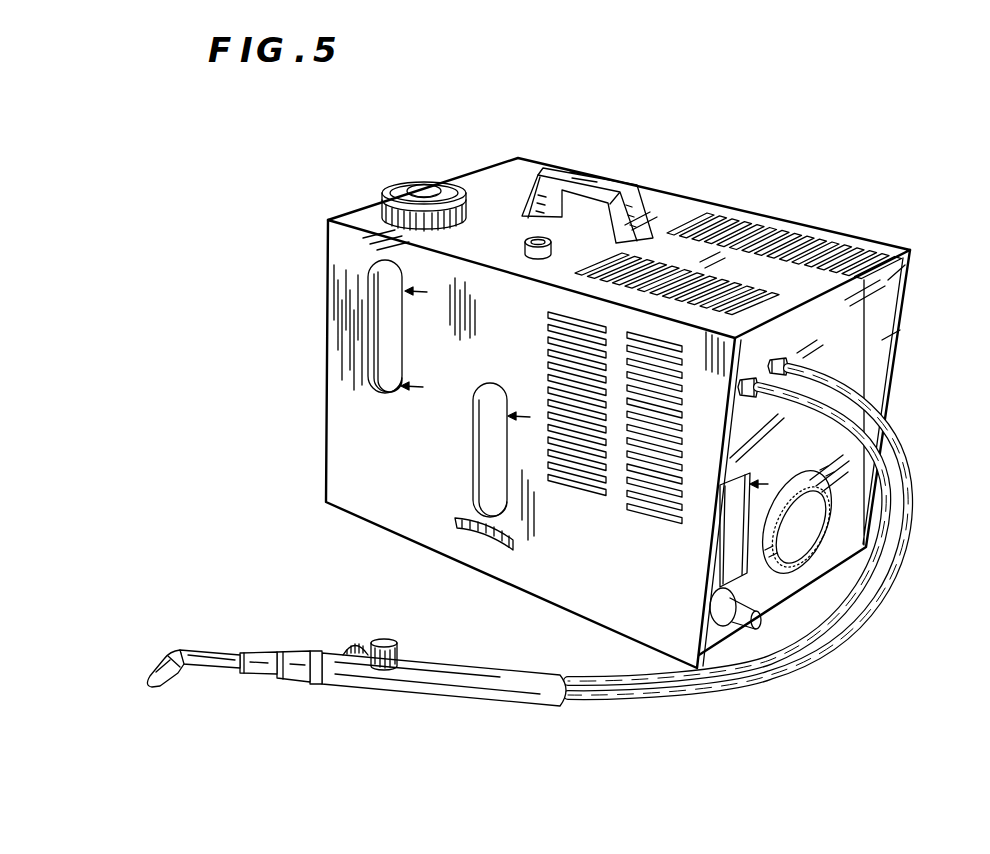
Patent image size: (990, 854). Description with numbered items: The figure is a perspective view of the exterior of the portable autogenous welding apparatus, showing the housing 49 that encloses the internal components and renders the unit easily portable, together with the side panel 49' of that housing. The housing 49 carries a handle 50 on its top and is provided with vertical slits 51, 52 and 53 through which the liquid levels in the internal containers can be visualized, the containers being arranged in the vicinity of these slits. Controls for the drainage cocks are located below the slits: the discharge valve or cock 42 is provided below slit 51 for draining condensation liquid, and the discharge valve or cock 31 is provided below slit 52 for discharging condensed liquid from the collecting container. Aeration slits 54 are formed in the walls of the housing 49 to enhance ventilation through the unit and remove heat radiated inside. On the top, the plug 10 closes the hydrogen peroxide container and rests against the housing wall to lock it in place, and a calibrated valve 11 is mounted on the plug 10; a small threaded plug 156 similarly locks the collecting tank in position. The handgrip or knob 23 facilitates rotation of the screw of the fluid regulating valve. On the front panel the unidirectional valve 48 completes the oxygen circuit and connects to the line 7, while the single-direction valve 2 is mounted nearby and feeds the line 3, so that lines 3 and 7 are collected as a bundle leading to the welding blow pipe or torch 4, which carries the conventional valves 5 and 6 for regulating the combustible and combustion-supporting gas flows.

The single-direction valve 2 is at (777, 358).
The line 3 is at (840, 388).
The welding blow pipe or torch 4 is at (478, 694).
The valve 5 is at (383, 642).
The valve 6 is at (356, 642).
The line 7 is at (824, 434).
The plug 10 is at (383, 204).
The calibrated valve 11 is at (423, 190).
The handgrip or knob 23 is at (797, 560).
The discharge valve or cock 31 is at (478, 556).
The discharge valve or cock 42 is at (745, 626).
The unidirectional valve 48 is at (757, 370).
The housing 49 is at (591, 413).
The housing side panel 49' is at (824, 458).
The handle 50 is at (622, 174).
The vertical slit 51 is at (756, 483).
The vertical slit 52 is at (473, 468).
The vertical slit 53 is at (403, 336).
The aeration slits 54 is at (830, 250).
The small threaded plug 156 is at (525, 243).